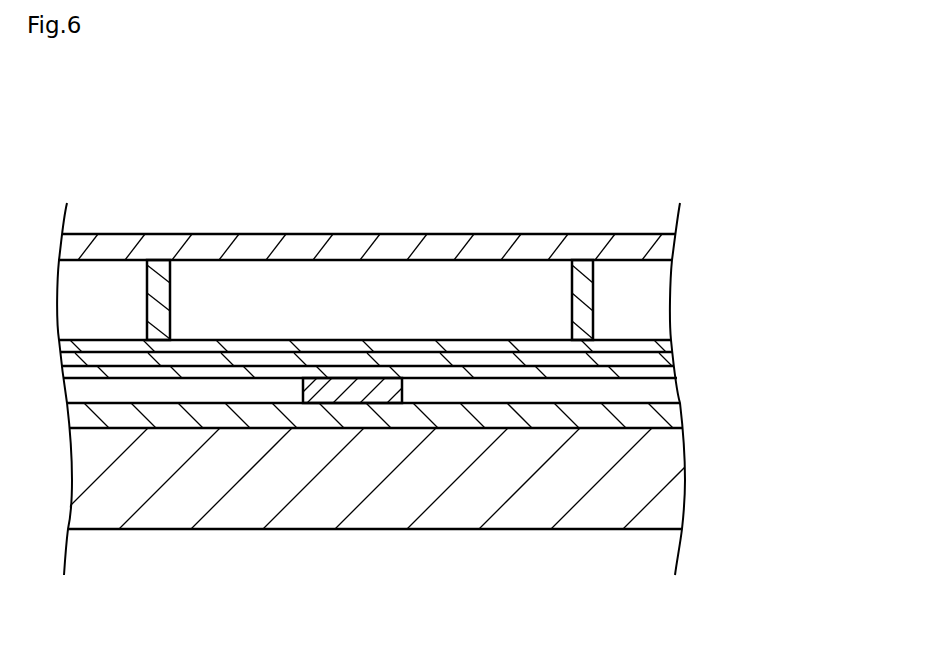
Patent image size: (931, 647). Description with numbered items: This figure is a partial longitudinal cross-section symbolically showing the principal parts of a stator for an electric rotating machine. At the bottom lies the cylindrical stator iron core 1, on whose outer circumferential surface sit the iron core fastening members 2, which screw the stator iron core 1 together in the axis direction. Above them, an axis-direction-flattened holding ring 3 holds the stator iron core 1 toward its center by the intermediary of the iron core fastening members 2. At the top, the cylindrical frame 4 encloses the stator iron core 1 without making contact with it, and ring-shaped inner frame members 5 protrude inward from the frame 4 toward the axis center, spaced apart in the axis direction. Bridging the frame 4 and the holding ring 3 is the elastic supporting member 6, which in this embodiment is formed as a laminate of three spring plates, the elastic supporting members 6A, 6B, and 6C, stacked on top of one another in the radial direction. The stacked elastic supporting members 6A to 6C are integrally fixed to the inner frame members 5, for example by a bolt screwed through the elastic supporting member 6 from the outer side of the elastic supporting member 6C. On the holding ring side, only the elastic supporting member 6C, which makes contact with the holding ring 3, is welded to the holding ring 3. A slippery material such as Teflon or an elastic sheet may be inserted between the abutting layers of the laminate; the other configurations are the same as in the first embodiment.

The stator iron core 1 is at (453, 513).
The iron core fastening member 2 is at (670, 413).
The holding ring 3 is at (315, 395).
The frame 4 is at (663, 248).
The inner frame member 5 is at (170, 285).
The elastic supporting member 6 is at (358, 224).
The elastic supporting member 6A is at (525, 350).
The elastic supporting member 6B is at (465, 360).
The elastic supporting member 6C is at (405, 372).